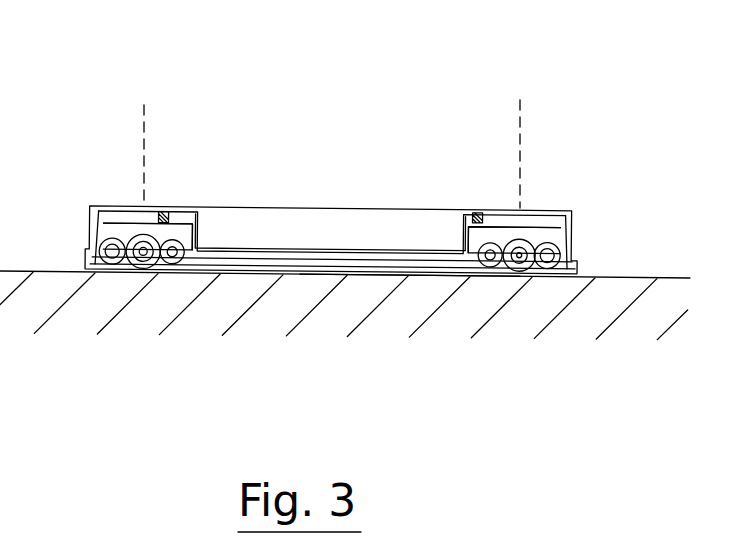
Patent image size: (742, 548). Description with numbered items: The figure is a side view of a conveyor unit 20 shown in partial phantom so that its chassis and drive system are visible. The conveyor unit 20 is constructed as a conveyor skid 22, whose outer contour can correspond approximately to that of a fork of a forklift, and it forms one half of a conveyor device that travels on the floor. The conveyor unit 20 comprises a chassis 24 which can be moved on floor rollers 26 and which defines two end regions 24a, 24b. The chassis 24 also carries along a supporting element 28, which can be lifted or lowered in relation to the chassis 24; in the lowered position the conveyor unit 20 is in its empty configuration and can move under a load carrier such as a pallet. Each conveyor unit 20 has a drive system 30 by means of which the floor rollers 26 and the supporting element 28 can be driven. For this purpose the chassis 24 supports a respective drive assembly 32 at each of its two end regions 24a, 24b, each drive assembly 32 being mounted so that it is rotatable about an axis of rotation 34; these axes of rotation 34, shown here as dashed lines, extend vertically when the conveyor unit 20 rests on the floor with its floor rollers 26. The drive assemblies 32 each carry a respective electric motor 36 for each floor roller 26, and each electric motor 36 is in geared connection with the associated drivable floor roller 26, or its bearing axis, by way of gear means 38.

The conveyor unit 20 is at (657, 150).
The conveyor skid 22 is at (584, 260).
The chassis 24 is at (343, 255).
The end region 24a is at (122, 207).
The end region 24b is at (540, 212).
The floor roller 26 is at (128, 272).
The supporting element 28 is at (277, 207).
The drive system 30 is at (464, 293).
The drive assembly 32 is at (110, 277).
The axis of rotation 34 is at (145, 115).
The electric motor 36 is at (170, 277).
The gear means 38 is at (164, 212).